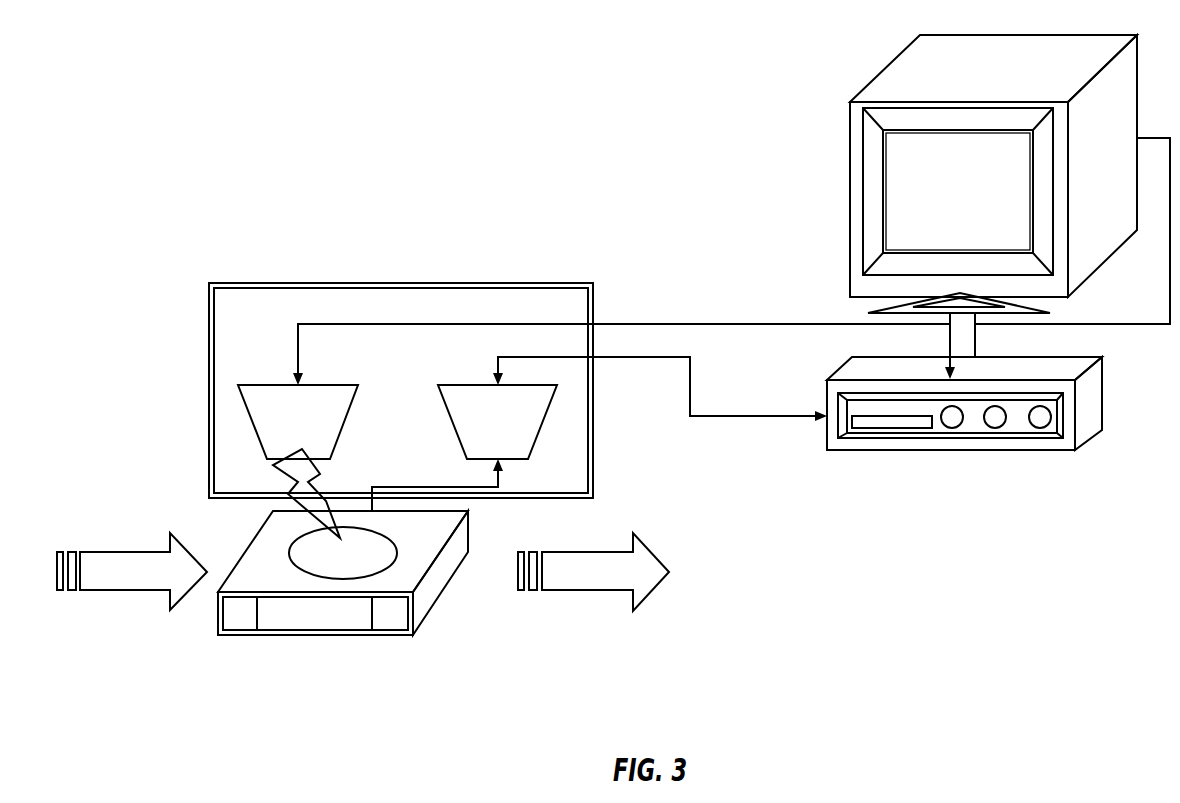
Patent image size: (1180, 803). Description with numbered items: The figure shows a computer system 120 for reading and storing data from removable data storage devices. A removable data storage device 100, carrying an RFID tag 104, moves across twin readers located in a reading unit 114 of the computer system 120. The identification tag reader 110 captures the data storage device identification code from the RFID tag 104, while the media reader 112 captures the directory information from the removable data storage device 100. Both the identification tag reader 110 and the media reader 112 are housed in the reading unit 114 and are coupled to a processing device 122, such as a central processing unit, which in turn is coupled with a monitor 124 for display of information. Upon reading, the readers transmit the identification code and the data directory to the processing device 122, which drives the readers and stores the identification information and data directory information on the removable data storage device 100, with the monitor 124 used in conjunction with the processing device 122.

The removable data storage device 100 is at (248, 635).
The RFID tag 104 is at (378, 550).
The identification tag reader 110 is at (317, 384).
The media reader 112 is at (480, 385).
The reading unit 114 is at (365, 283).
The computer system 120 is at (522, 72).
The processing device 122 is at (1042, 452).
The monitor 124 is at (848, 180).